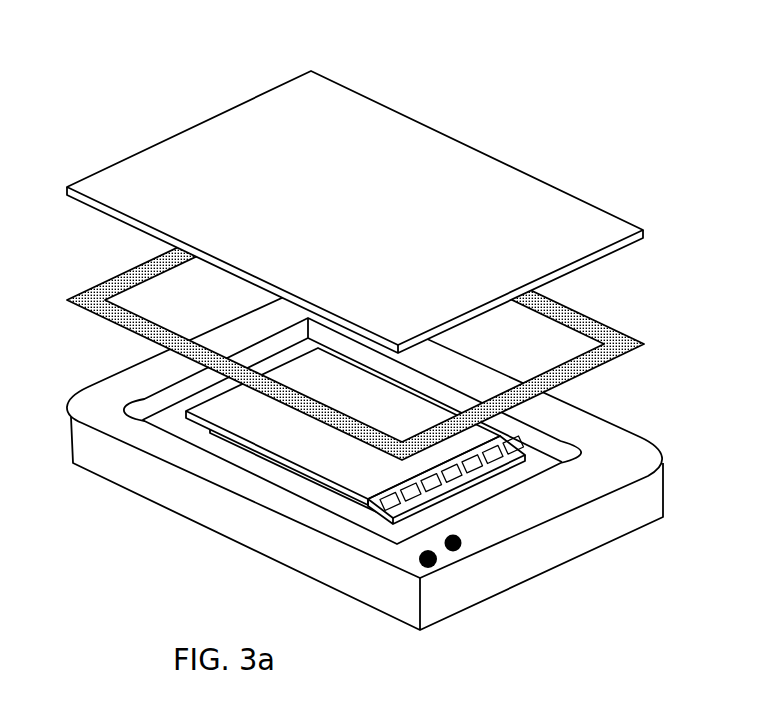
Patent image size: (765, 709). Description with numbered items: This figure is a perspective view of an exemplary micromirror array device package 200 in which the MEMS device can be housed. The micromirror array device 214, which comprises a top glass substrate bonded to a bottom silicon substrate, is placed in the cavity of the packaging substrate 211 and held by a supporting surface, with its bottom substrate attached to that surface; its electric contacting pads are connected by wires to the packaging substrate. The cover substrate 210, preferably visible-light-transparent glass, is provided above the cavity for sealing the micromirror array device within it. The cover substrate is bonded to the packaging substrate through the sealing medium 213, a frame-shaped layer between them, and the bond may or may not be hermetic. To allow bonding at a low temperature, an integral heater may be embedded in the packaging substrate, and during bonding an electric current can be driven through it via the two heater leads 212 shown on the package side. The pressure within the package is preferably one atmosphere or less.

The image scanning module assembly 200 is at (364, 324).
The cover substrate 210 is at (485, 180).
The packaging substrate 211 is at (639, 438).
The control buttons 212 is at (461, 550).
The sealing medium 213 is at (87, 290).
The micromirror array device 214 is at (330, 453).